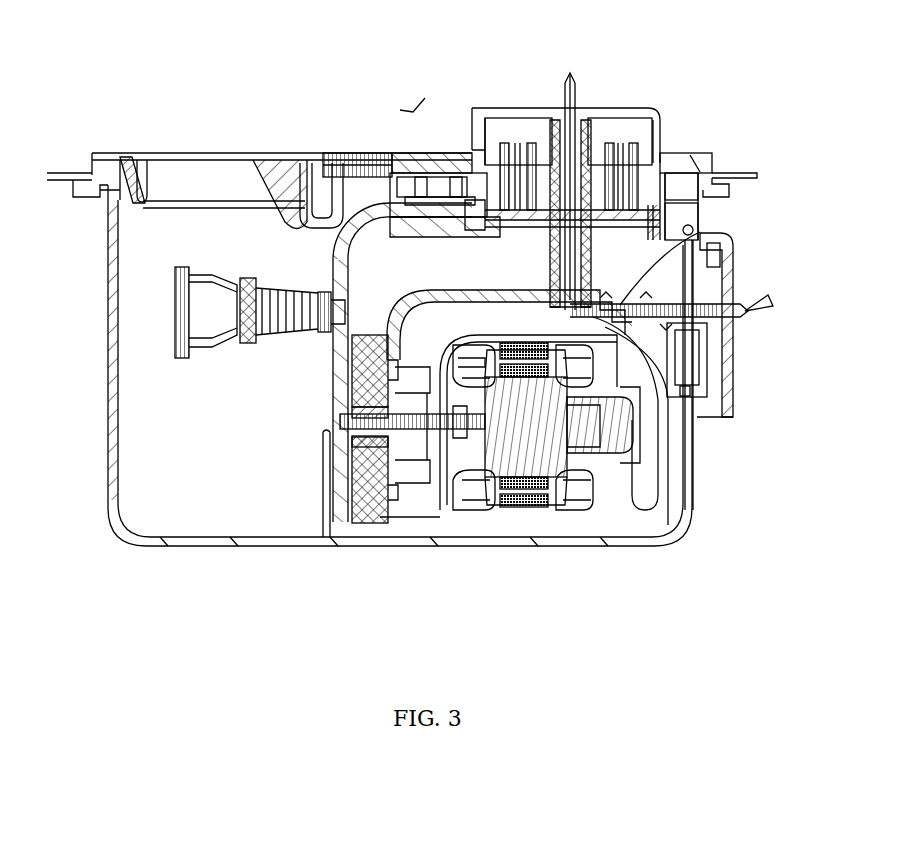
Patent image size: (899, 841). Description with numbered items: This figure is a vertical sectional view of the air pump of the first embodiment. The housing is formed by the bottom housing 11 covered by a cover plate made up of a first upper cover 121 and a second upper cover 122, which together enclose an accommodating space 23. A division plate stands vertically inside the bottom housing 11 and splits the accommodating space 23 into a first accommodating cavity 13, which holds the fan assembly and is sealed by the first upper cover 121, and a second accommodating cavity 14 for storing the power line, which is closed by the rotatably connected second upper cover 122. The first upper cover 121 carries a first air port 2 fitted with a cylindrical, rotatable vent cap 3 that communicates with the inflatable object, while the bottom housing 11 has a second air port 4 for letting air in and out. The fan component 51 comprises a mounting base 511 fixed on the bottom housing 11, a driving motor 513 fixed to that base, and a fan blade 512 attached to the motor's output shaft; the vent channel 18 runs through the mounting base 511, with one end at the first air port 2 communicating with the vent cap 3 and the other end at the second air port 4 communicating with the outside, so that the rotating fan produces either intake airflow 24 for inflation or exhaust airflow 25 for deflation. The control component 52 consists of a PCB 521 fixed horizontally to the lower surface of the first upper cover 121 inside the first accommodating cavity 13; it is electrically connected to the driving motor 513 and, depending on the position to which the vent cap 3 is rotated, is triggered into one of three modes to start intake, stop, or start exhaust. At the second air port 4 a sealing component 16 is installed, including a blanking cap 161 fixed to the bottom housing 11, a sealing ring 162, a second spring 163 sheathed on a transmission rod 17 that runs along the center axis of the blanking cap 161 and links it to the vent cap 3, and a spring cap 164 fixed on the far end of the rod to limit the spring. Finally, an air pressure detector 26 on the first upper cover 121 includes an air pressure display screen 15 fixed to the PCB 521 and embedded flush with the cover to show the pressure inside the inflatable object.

The first air port 2 is at (665, 155).
The vent cap 3 is at (648, 112).
The second air port 4 is at (698, 230).
The bottom housing 11 is at (112, 497).
The first upper cover 121 is at (690, 160).
The second upper cover 122 is at (172, 152).
The first accommodating cavity 13 is at (345, 312).
The second accommodating cavity 14 is at (238, 392).
The air pressure display screen 15 is at (368, 153).
The sealing component 16 is at (710, 360).
The blanking cap 161 is at (698, 300).
The sealing ring 162 is at (700, 385).
The second spring 163 is at (705, 357).
The spring cap 164 is at (692, 395).
The transmission rod 17 is at (705, 265).
The vent channel 18 is at (573, 317).
The accommodating space 23 is at (175, 312).
The intake airflow 24 is at (574, 80).
The exhaust airflow 25 is at (770, 300).
The air pressure detector 26 is at (415, 108).
The fan component 51 is at (434, 481).
The mounting base 511 is at (417, 510).
The fan blade 512 is at (381, 487).
The driving motor 513 is at (520, 452).
The control component 52 is at (298, 129).
The PCB 521 is at (382, 157).